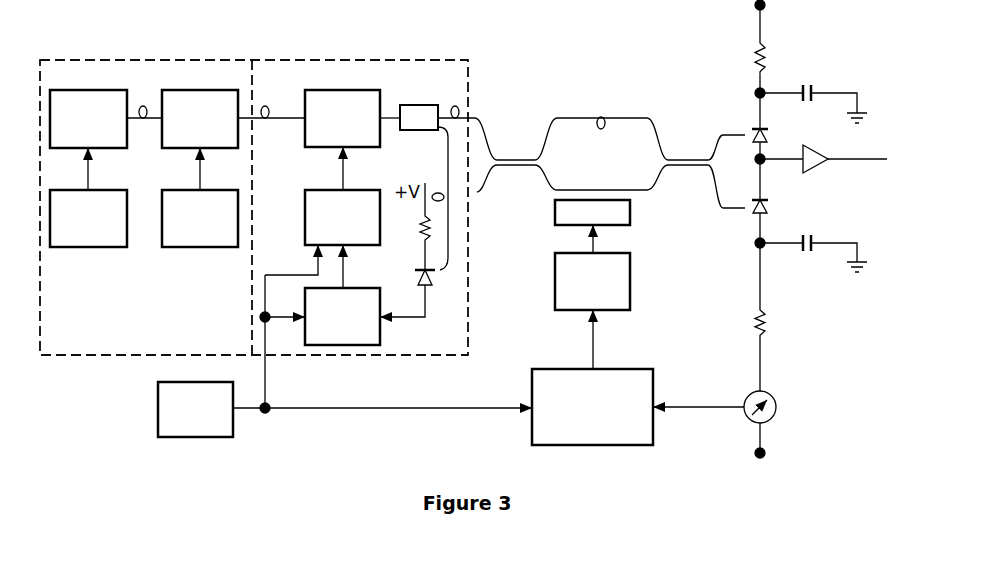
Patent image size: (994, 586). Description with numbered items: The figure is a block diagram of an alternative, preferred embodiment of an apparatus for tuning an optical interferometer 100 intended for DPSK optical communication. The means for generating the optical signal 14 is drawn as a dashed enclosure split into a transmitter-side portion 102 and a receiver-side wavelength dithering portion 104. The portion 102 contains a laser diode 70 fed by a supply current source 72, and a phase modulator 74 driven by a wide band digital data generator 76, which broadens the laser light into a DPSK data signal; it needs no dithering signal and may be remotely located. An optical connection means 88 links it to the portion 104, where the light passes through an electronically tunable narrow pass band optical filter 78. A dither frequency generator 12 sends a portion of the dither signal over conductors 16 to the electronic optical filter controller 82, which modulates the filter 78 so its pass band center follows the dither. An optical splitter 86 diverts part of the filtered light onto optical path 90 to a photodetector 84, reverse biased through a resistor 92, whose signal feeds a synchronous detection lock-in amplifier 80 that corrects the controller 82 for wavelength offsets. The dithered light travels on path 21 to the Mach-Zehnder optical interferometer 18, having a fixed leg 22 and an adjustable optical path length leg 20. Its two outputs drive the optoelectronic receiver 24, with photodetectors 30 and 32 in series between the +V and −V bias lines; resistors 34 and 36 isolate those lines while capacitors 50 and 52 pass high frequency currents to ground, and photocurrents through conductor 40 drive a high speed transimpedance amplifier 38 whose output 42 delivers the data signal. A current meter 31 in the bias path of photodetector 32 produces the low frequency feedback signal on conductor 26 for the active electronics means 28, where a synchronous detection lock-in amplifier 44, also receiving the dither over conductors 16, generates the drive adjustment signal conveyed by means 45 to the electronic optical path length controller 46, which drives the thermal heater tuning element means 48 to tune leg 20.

The apparatus for tuning an optical interferometer 100 is at (422, 52).
The means for generating the optical signal 14 is at (350, 59).
The portion of the means for generating the optical signal 102 is at (190, 207).
The wavelength dithering portion 104 is at (275, 207).
The laser diode 70 is at (88, 119).
The supply current source 72 is at (88, 197).
The phase modulator 74 is at (200, 119).
The wide band digital data generator 76 is at (200, 197).
The electronically tunable narrow pass band optical filter 78 is at (342, 118).
The synchronous detection lock-in amplifier 80 is at (342, 295).
The electronic optical filter controller 82 is at (342, 196).
The optical splitter 86 is at (420, 104).
The optical connection means 88 is at (277, 117).
The optical path 90 is at (445, 162).
The resistor 92 is at (420, 233).
The photodetector 84 is at (414, 279).
The means for applying a portion of the electronic dithering signal 16 is at (287, 275).
The dither frequency generator 12 is at (195, 409).
The optical signal path 21 is at (470, 117).
The optical interferometer 18 is at (610, 147).
The optical leg 22 is at (577, 117).
The optical path length leg 20 is at (625, 189).
The optoelectronic receiver 24 is at (789, 231).
The resistor 34 is at (771, 51).
The capacitor 50 is at (813, 87).
The photodetector 30 is at (770, 134).
The photodetector 32 is at (770, 206).
The conductor 40 is at (792, 160).
The high speed transimpedance amplifier 38 is at (815, 149).
The output 42 is at (870, 158).
The capacitor 52 is at (813, 237).
The resistor 36 is at (771, 316).
The current meter 31 is at (778, 399).
The means for delivering the electronic feedback signal 26 is at (692, 406).
The active electronics means 28 is at (619, 322).
The synchronous detection lock-in amplifier 44 is at (592, 407).
The means for conveying the drive adjustment signal 45 is at (598, 352).
The electronic optical path length controller 46 is at (592, 267).
The optical path length tuning element means 48 is at (632, 209).